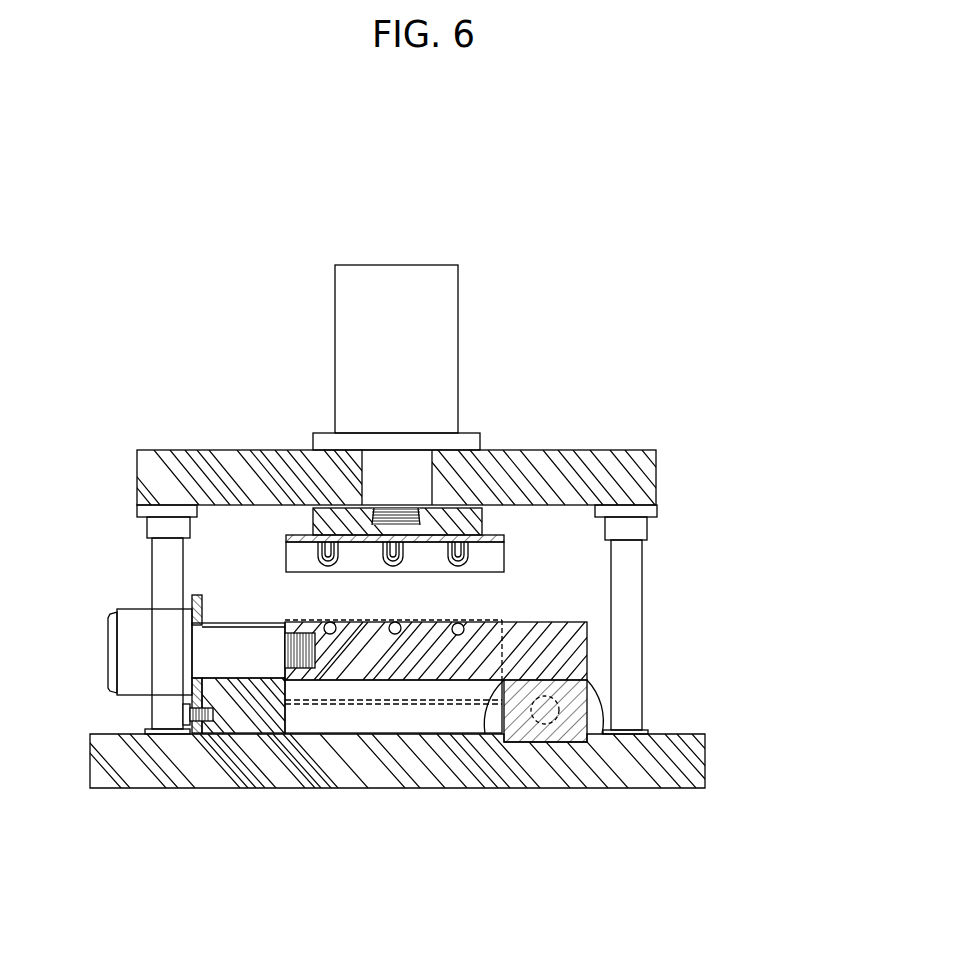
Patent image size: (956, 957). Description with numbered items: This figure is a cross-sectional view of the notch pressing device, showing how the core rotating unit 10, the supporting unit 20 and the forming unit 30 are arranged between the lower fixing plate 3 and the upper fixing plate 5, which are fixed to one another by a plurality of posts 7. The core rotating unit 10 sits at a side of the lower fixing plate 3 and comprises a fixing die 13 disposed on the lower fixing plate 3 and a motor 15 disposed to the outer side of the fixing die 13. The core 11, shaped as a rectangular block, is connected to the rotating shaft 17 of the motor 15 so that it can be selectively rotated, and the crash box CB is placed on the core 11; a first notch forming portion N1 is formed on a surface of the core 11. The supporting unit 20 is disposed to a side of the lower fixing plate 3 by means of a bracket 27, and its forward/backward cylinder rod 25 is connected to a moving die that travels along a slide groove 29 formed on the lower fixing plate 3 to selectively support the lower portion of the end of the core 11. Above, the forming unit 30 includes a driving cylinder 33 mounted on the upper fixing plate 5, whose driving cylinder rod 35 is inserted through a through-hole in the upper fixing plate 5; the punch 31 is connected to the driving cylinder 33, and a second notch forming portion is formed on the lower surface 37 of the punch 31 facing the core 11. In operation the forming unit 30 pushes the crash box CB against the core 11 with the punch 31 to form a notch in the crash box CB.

The lower fixing plate 3 is at (120, 773).
The upper fixing plate 5 is at (630, 450).
The posts 7 is at (157, 563).
The core rotating unit 10 is at (128, 706).
The core 11 is at (565, 648).
The fixing die 13 is at (248, 700).
The motor 15 is at (123, 650).
The rotating shaft 17 is at (245, 637).
The supporting unit 20 is at (603, 668).
The forward/backward cylinder rod 25 is at (545, 725).
The bracket 27 is at (592, 700).
The slide groove 29 is at (582, 724).
The forming unit 30 is at (518, 386).
The punch 31 is at (504, 552).
The driving cylinder 33 is at (447, 347).
The driving cylinder rod 35 is at (393, 477).
The lower surface 37 is at (276, 553).
The crash box CB is at (475, 705).
The first notch forming portion N1 is at (446, 650).